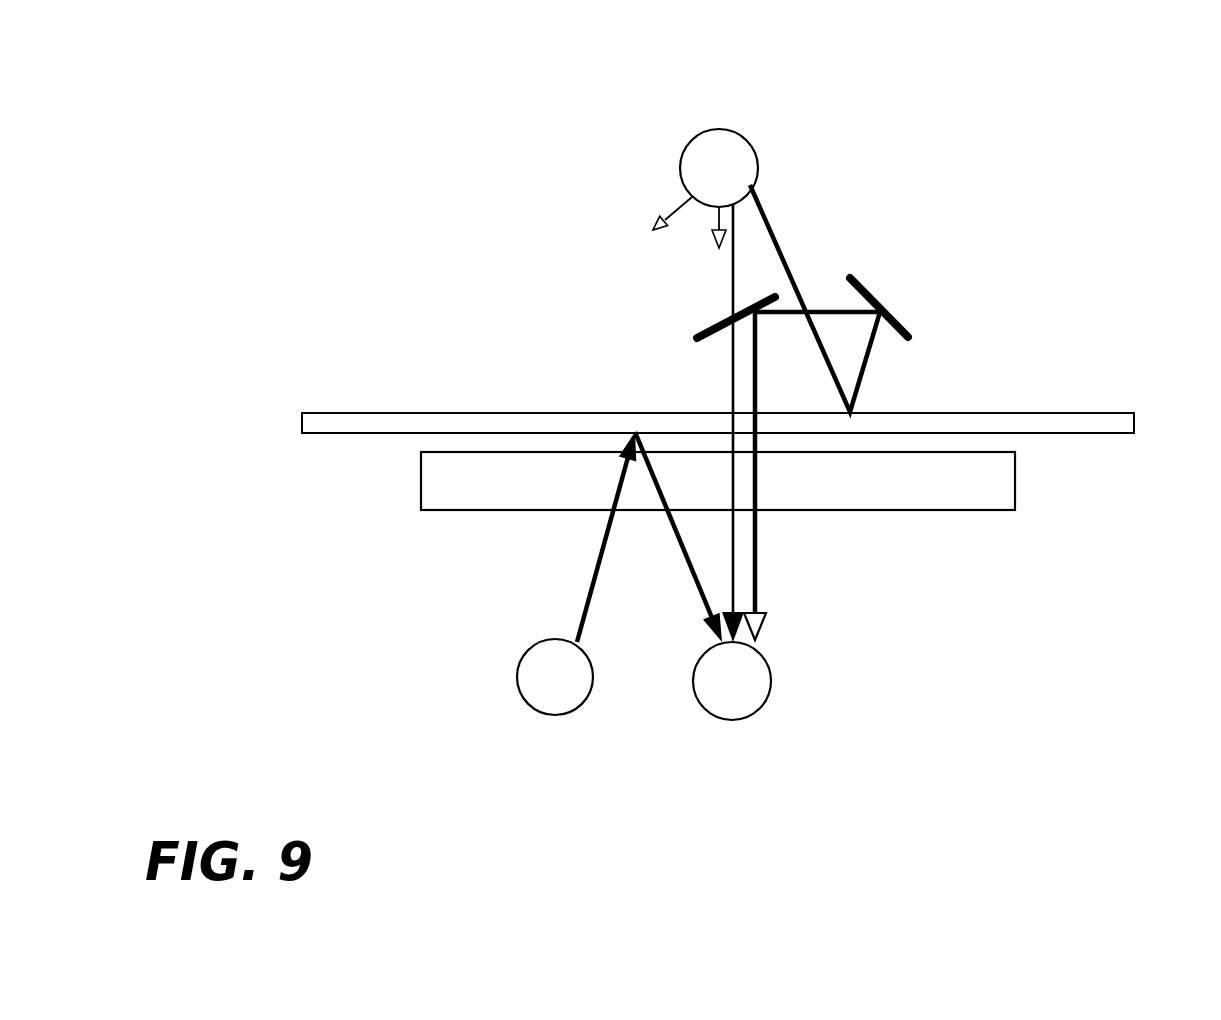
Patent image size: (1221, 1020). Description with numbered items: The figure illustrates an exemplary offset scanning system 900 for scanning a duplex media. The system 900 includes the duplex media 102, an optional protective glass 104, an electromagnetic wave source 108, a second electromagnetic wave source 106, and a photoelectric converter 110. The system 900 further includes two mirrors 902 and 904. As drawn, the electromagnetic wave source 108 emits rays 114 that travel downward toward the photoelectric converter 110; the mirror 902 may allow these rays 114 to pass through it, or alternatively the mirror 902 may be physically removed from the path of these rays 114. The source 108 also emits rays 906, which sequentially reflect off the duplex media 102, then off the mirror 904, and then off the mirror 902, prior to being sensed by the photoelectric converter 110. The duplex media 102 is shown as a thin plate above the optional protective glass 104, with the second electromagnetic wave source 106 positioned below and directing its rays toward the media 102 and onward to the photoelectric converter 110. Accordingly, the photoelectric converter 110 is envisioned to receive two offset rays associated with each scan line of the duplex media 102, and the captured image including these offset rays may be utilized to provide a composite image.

The offset scanning system 900 is at (1056, 120).
The electromagnetic wave source 108 is at (761, 148).
The rays 114 is at (658, 423).
The rays 906 is at (831, 412).
The mirror 902 is at (655, 331).
The mirror 904 is at (941, 290).
The duplex media 102 is at (718, 375).
The protective glass 104 is at (769, 525).
The electromagnetic wave source 106 is at (632, 615).
The photoelectric converter 110 is at (800, 700).